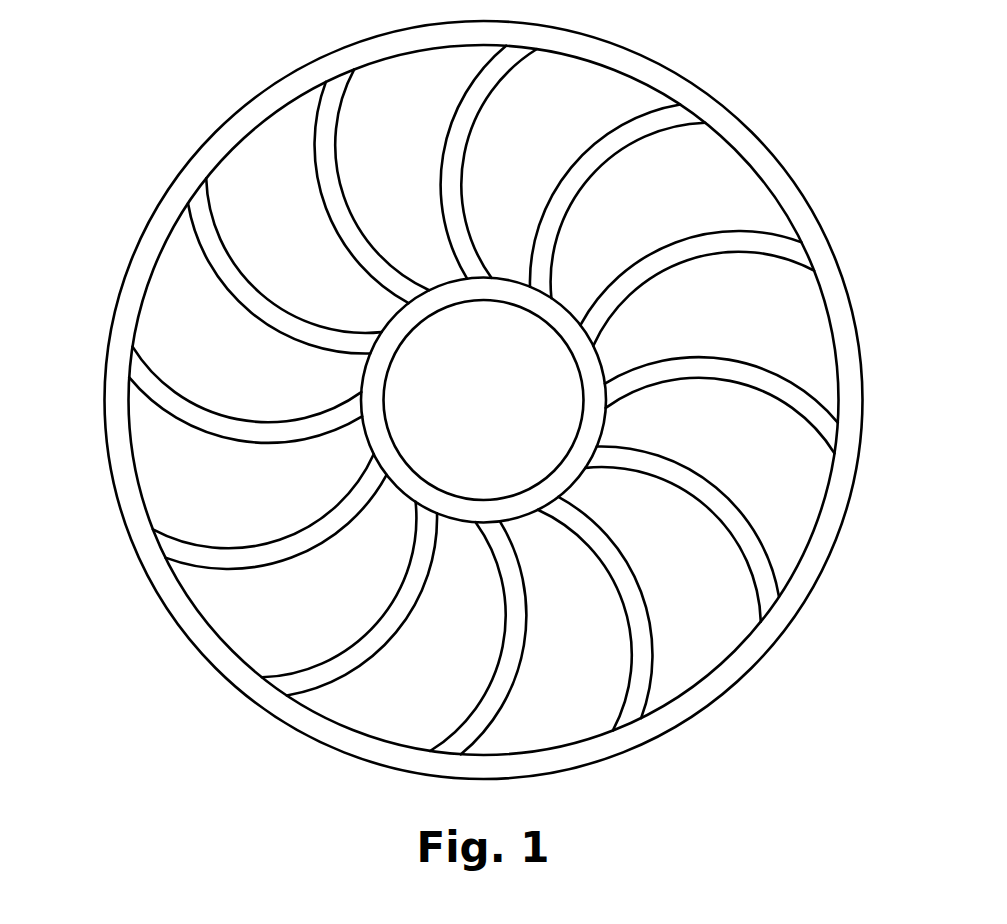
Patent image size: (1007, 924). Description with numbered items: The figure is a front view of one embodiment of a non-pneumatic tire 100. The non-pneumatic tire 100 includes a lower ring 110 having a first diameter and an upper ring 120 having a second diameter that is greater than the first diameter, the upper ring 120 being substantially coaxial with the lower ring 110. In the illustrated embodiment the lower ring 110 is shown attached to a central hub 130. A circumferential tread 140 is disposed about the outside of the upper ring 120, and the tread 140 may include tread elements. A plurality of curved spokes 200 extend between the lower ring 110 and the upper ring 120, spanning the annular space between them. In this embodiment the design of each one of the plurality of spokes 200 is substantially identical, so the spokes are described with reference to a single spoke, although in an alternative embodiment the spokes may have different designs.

The non-pneumatic tire 100 is at (447, 391).
The lower ring 110 is at (367, 437).
The upper ring 120 is at (136, 487).
The hub 130 is at (458, 510).
The circumferential tread 140 is at (113, 399).
The plurality of spokes 200 is at (487, 82).